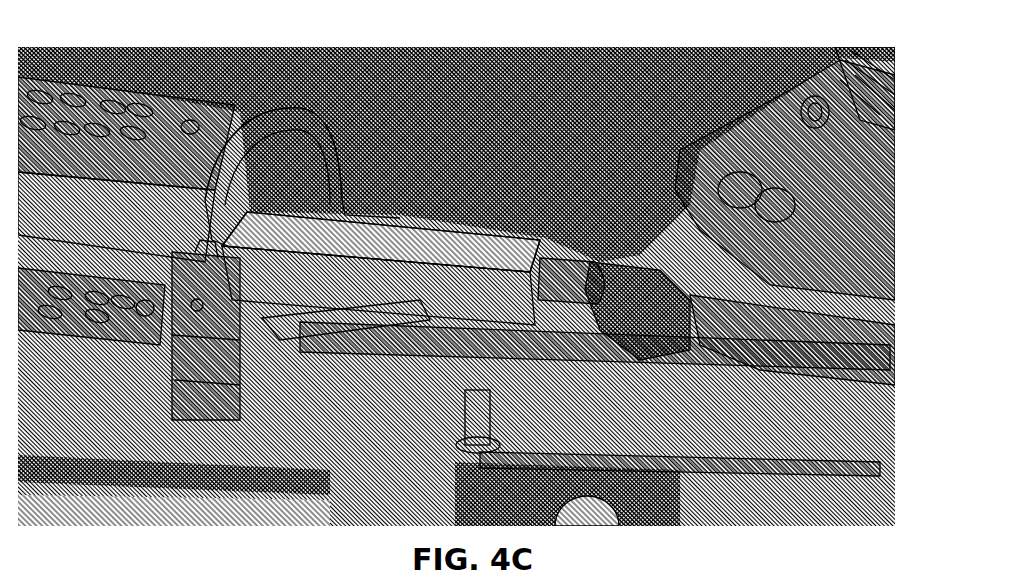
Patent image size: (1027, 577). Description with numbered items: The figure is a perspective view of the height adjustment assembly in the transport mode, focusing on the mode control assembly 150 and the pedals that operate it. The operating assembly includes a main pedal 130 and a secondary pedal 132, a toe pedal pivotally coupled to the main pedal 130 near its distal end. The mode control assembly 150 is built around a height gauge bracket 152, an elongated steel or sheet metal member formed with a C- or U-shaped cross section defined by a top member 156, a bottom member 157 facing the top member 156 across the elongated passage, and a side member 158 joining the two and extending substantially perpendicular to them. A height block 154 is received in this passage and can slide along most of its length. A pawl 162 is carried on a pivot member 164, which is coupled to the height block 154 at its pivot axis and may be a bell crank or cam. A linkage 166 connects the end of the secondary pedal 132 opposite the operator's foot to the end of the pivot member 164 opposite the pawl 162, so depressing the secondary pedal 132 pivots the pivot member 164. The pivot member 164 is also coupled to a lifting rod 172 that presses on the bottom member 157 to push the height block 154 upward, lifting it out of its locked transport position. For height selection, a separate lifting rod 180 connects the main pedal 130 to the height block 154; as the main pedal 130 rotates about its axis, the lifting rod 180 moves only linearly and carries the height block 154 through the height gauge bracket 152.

The main pedal 130 is at (757, 206).
The secondary pedal 132 is at (806, 71).
The mode control assembly 150 is at (126, 141).
The height gauge bracket 152 is at (253, 114).
The height block 154 is at (284, 137).
The top member 156 is at (109, 79).
The bottom member 157 is at (91, 411).
The side member 158 is at (417, 123).
The pawl 162 is at (205, 401).
The pivot member 164 is at (245, 442).
The linkage 166 is at (680, 510).
The lifting rod 172 is at (576, 425).
The lifting rod 180 is at (456, 194).